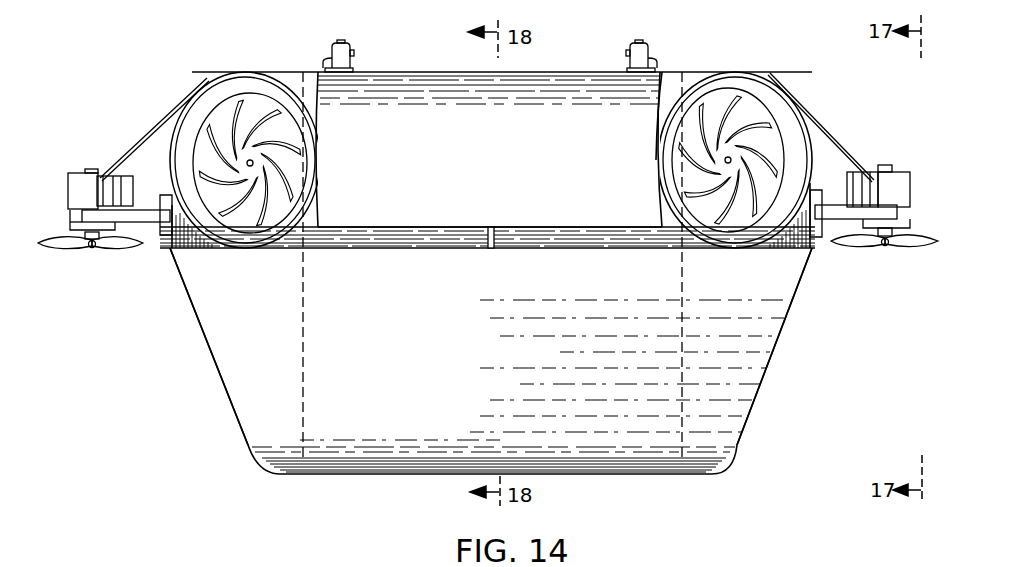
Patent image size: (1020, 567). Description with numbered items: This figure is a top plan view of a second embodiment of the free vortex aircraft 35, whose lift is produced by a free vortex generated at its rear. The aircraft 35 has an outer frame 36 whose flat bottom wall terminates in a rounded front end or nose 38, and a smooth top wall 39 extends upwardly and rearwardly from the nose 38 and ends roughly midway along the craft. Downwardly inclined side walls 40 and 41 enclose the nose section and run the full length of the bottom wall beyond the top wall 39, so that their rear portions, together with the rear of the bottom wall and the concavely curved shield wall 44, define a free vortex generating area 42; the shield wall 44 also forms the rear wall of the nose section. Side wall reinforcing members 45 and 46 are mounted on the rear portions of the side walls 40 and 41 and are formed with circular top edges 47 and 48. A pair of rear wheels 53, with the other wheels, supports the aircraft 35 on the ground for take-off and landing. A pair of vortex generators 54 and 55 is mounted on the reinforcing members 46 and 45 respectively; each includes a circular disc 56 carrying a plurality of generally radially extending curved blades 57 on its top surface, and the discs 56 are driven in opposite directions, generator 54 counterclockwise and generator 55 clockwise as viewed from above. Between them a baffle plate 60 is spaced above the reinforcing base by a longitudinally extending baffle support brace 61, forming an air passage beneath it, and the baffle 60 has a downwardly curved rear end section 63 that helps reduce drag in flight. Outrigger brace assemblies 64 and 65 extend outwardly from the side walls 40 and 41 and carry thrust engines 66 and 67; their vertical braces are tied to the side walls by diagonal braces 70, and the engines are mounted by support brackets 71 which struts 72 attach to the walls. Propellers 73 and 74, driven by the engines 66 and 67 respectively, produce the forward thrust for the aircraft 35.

The aircraft 35 is at (180, 330).
The outer frame 36 is at (795, 320).
The rounded front end or nose 38 is at (372, 472).
The top wall 39 is at (712, 400).
The side wall 40 is at (178, 233).
The side wall 41 is at (814, 250).
The free vortex generating area 42 is at (668, 100).
The shield wall 44 is at (413, 245).
The side wall reinforcing member 45 is at (207, 105).
The side wall reinforcing member 46 is at (735, 80).
The circular top edge 47 is at (178, 120).
The circular top edge 48 is at (800, 117).
The rear wheels 53 is at (340, 44).
The vortex generator 54 is at (700, 218).
The vortex generator 55 is at (240, 236).
The circular disc 56 is at (243, 103).
The curved blades 57 is at (265, 100).
The baffle plate 60 is at (568, 106).
The baffle support brace 61 is at (494, 233).
The rear end section 63 is at (410, 82).
The outrigger brace assembly 64 is at (122, 148).
The outrigger brace assembly 65 is at (852, 136).
The thrust engine 66 is at (78, 190).
The thrust engine 67 is at (900, 190).
The diagonal braces 70 is at (134, 216).
The support brackets 71 is at (85, 205).
The struts 72 is at (160, 130).
The propeller 73 is at (56, 249).
The propeller 74 is at (914, 246).